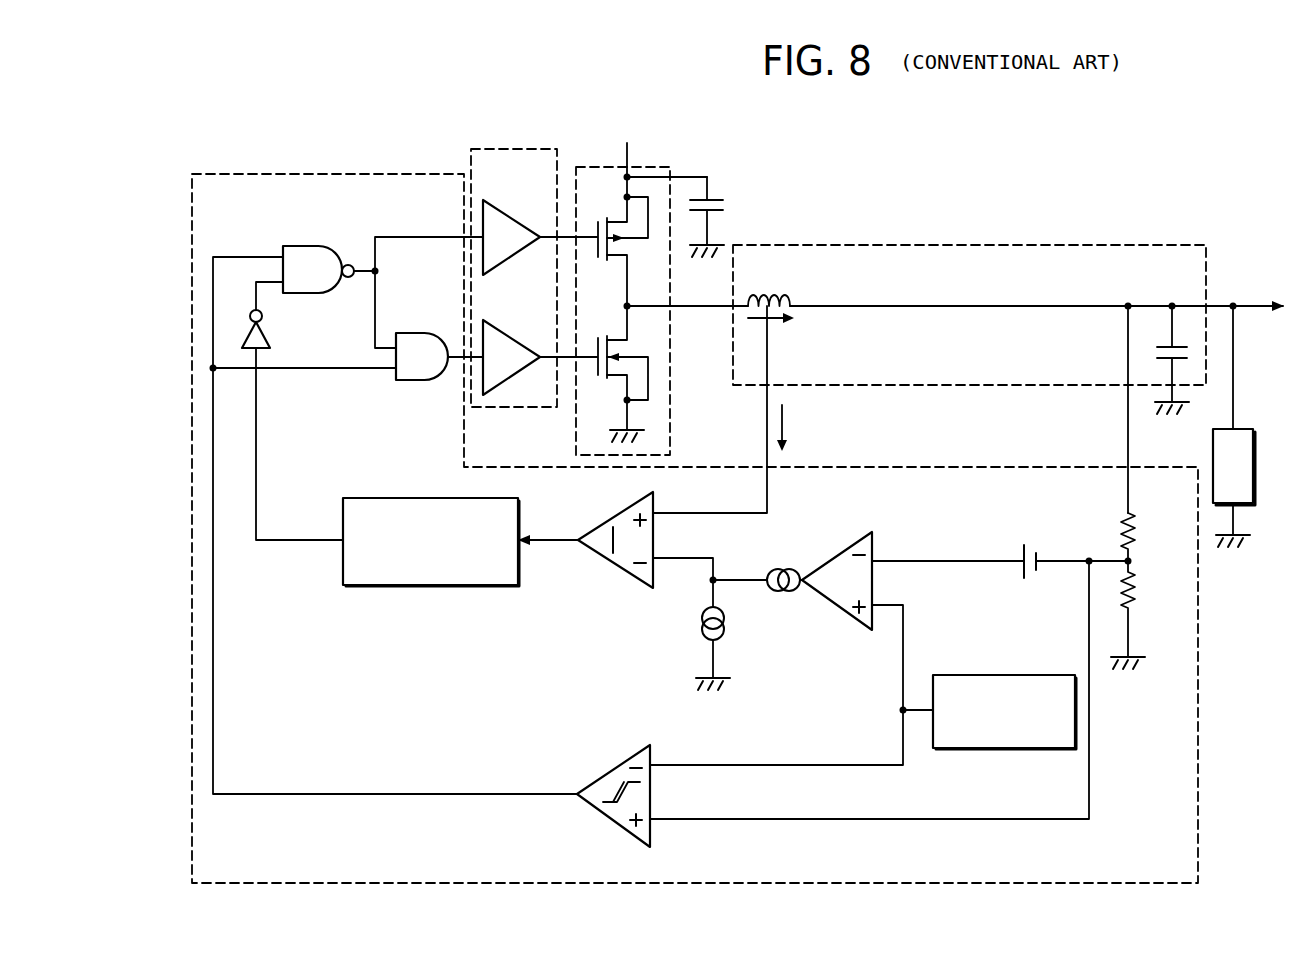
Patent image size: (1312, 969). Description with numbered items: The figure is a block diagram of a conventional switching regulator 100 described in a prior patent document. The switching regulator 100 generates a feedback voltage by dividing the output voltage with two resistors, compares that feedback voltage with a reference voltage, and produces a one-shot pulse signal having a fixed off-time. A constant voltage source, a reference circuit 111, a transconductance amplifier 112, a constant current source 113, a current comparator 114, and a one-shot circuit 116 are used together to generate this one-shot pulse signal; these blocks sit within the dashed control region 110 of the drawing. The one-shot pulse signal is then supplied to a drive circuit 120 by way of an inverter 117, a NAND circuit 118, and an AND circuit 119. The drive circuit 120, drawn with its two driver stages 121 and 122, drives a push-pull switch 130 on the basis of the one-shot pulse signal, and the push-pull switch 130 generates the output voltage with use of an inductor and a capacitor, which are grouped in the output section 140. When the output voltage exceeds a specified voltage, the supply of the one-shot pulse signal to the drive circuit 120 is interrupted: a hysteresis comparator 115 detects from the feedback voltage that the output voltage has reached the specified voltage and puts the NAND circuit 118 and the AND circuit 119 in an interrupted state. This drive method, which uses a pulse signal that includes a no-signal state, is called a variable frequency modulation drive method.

The switching regulator 100 is at (993, 198).
The control circuit 110 is at (305, 174).
The reference circuit 111 is at (1005, 675).
The transconductance amplifier 112 is at (830, 553).
The constant current source 113 is at (702, 617).
The current comparator 114 is at (596, 519).
The hysteresis comparator 115 is at (596, 773).
The one-shot circuit 116 is at (400, 498).
The inverter 117 is at (270, 338).
The NAND circuit 118 is at (316, 246).
The AND circuit 119 is at (421, 333).
The drive circuit 120 is at (521, 149).
The P-channel driver (PDR) 121 is at (517, 217).
The N-channel driver (NDR) 122 is at (517, 338).
The push-pull switch 130 is at (651, 167).
The output filter (inductor L, capacitor C) 140 is at (909, 245).